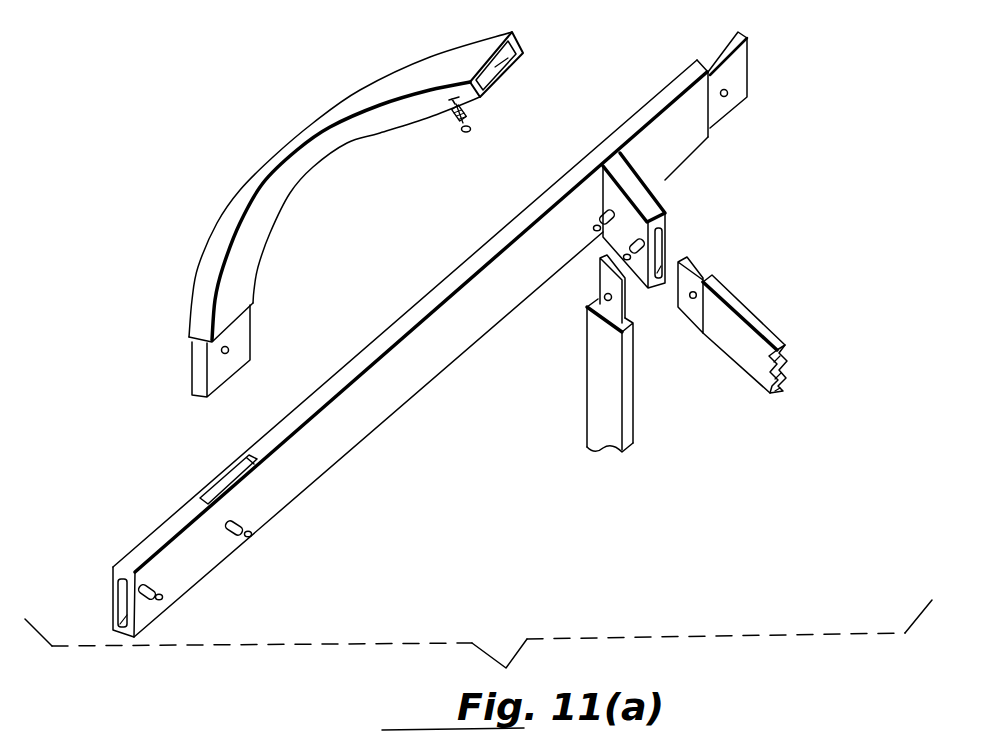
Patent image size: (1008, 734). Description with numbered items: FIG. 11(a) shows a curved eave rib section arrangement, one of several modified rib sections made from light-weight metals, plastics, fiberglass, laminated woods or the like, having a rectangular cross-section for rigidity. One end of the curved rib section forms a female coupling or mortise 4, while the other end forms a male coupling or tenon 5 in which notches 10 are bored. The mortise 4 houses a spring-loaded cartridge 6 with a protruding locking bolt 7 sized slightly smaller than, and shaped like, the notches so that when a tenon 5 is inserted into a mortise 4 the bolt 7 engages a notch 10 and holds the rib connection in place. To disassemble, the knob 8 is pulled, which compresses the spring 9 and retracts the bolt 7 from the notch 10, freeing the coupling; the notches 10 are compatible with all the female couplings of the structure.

The female coupling or mortise 4 is at (520, 67).
The male coupling or tenon 5 is at (244, 349).
The spring-loaded cartridge 6 is at (468, 113).
The locking bolt 7 is at (447, 100).
The knob 8 is at (465, 133).
The spring 9 is at (455, 113).
The notch 10 is at (232, 350).